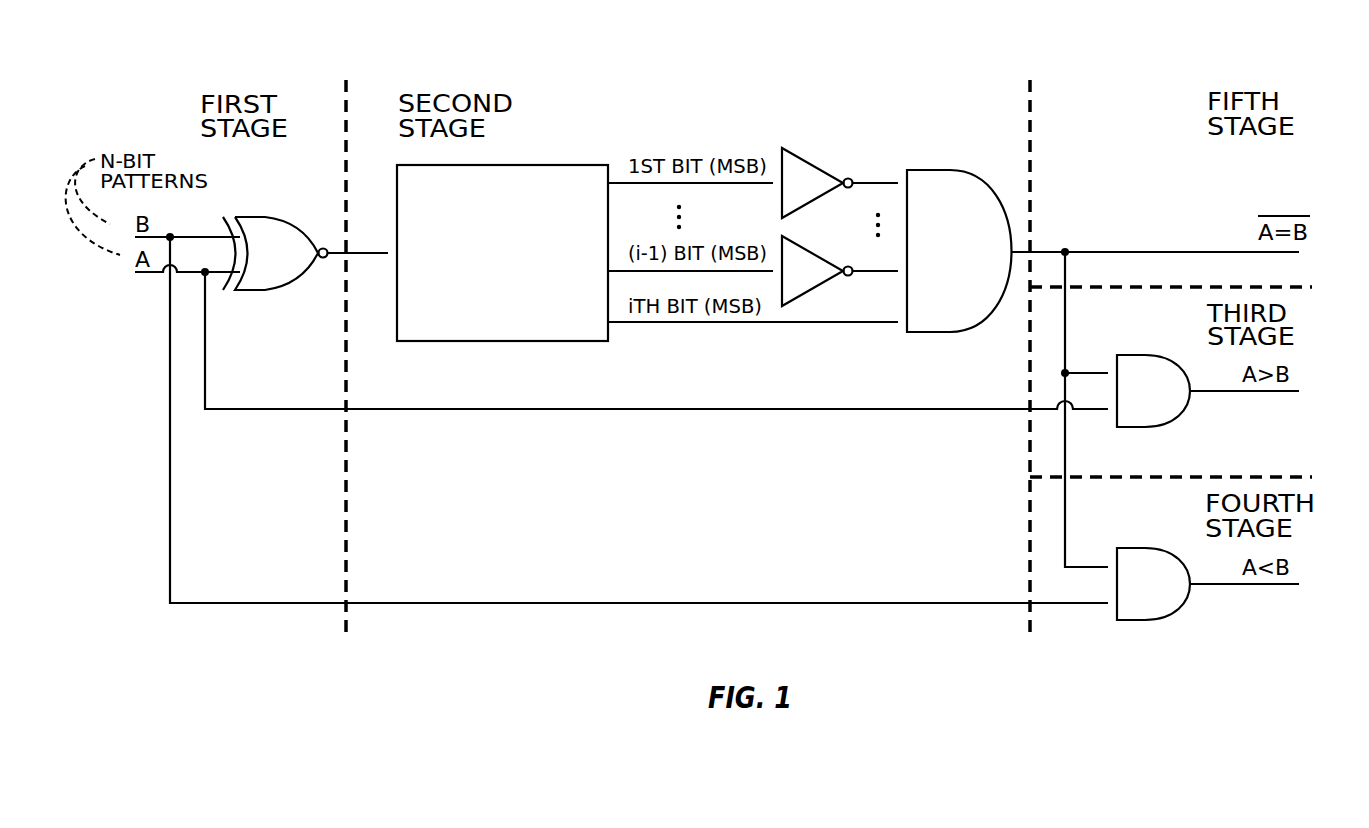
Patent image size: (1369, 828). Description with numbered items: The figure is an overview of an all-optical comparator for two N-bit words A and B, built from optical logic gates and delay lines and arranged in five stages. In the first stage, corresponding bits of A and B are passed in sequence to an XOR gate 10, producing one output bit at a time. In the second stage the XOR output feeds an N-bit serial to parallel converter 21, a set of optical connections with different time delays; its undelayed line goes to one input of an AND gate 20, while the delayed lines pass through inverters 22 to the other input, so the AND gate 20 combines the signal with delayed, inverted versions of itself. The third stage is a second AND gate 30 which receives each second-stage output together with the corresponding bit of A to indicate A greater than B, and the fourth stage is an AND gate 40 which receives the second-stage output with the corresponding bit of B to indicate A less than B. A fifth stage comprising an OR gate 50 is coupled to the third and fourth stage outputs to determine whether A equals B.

The XOR gate 10 is at (263, 290).
The serial to parallel converter 21 is at (490, 306).
The inverters 22 is at (806, 155).
The AND gate 20 is at (952, 332).
The second AND gate 30 is at (1170, 427).
The AND gate 40 is at (1170, 620).
The OR gate 50 is at (1153, 252).